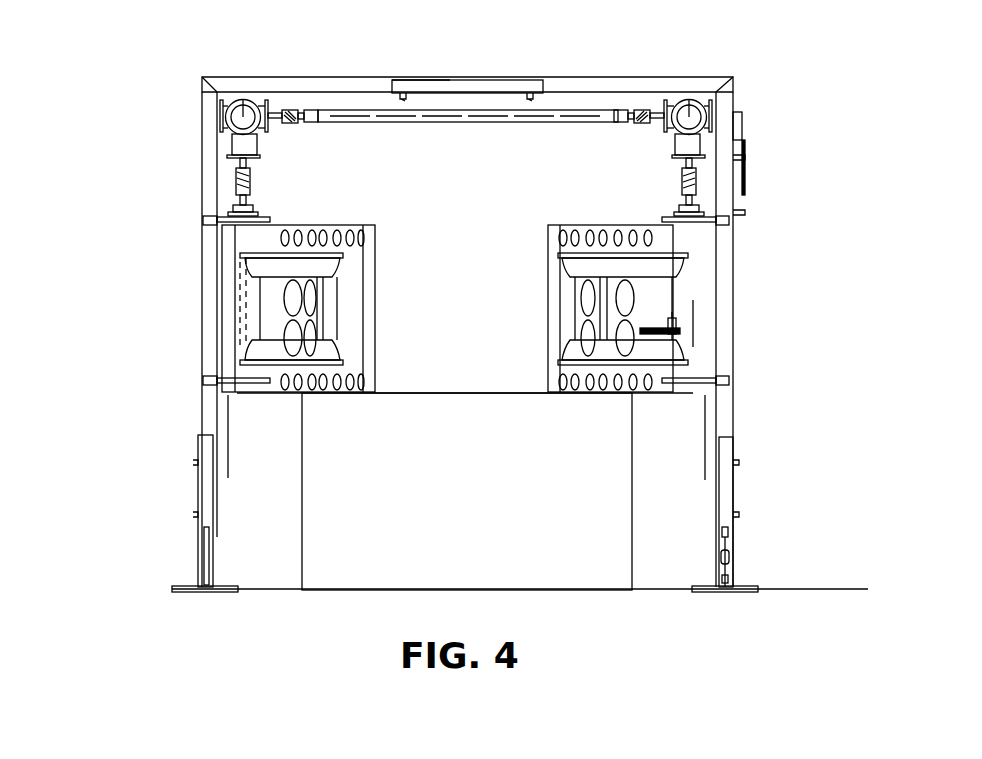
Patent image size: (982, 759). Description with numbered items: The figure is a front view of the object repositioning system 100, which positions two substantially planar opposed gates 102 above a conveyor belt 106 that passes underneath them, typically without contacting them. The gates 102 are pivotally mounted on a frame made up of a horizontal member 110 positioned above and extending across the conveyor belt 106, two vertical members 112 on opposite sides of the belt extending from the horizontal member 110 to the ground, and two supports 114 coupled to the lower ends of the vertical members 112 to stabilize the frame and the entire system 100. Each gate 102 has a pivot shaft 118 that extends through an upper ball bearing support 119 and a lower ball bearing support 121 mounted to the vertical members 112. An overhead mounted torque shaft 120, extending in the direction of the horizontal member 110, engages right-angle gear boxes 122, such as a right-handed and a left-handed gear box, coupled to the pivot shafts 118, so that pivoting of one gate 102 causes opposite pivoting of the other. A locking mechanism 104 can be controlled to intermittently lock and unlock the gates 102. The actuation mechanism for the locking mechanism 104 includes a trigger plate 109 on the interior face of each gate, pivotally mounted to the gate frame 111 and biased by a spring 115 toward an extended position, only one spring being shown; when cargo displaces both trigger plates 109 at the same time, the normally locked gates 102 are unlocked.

The object repositioning system 100 is at (93, 71).
The gates 102 is at (532, 272).
The locking mechanism 104 is at (240, 397).
The conveyor belt 106 is at (490, 392).
The trigger plate 109 is at (318, 225).
The horizontal member 110 is at (345, 77).
The gate frame 111 is at (330, 355).
The vertical members 112 is at (203, 288).
The supports 114 is at (729, 561).
The spring 115 is at (658, 326).
The pivot shaft 118 is at (240, 203).
The upper ball bearing support 119 is at (235, 213).
The torque shaft 120 is at (458, 118).
The lower ball bearing support 121 is at (216, 373).
The right-angle gear boxes 122 is at (243, 100).